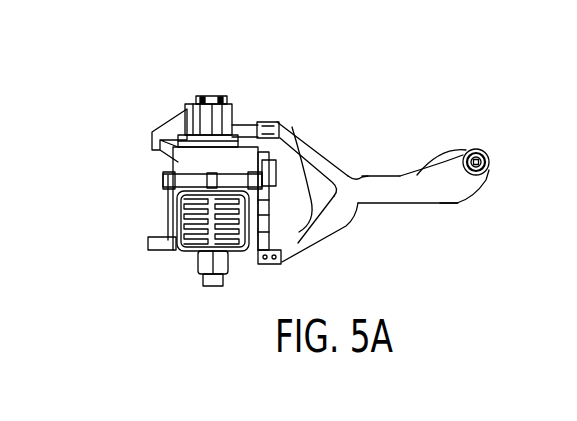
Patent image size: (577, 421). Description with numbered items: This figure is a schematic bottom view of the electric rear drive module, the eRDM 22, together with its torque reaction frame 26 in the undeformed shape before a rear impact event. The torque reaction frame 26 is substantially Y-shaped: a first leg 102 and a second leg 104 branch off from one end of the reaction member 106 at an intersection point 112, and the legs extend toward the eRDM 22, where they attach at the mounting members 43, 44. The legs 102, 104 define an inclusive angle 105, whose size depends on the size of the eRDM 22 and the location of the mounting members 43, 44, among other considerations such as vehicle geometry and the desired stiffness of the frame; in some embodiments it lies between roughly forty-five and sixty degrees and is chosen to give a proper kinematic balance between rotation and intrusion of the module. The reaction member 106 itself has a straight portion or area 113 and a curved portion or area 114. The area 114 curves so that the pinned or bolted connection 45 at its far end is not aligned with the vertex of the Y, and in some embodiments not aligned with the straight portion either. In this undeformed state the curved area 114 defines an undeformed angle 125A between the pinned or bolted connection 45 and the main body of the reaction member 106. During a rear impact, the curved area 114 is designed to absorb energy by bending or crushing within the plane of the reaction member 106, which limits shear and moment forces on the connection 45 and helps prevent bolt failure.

The eRDM 22 is at (170, 132).
The torque reaction frame 26 is at (382, 163).
The mounting member 43 is at (256, 124).
The mounting member 44 is at (268, 266).
The pinned or bolted connection 45 is at (482, 148).
The first leg 102 is at (304, 136).
The second leg 104 is at (308, 242).
The inclusive angle 105 is at (292, 127).
The reaction member 106 is at (412, 201).
The intersection point 112 is at (372, 168).
The straight portion 113 is at (372, 194).
The curved portion 114 is at (455, 203).
The undeformed angle 125A is at (443, 154).